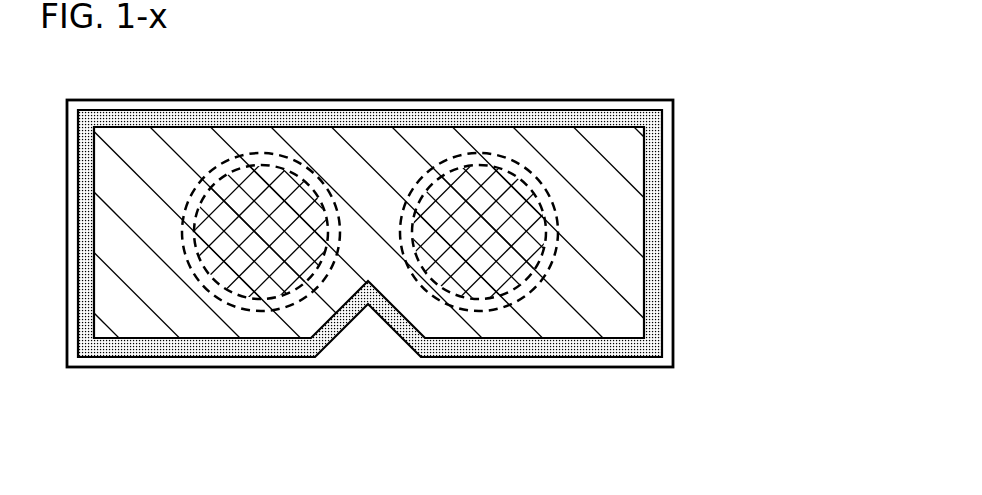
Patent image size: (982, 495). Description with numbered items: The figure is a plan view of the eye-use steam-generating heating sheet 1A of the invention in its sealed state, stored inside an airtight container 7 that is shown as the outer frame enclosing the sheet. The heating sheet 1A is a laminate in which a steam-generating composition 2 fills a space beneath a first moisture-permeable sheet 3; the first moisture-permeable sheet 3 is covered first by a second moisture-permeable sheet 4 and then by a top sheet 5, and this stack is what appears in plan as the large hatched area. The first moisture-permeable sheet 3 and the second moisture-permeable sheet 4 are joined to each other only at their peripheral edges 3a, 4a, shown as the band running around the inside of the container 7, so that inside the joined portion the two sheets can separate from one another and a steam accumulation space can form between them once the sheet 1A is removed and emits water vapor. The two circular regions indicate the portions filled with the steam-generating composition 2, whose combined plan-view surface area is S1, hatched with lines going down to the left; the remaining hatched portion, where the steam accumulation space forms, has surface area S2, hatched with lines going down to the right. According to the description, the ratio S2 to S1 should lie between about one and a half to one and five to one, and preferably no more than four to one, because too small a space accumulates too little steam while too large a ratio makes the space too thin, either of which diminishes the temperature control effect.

The eye-use steam-generating heating sheet 1A is at (822, 367).
The steam-generating composition 2 is at (481, 176).
The first moisture-permeable sheet 3 is at (426, 289).
The second moisture-permeable sheet 4 is at (426, 289).
The top sheet 5 is at (426, 289).
The peripheral edge of the first moisture-permeable sheet 3a is at (457, 233).
The peripheral edge of the second moisture-permeable sheet 4a is at (457, 233).
The airtight container 7 is at (415, 233).
The surface area of the portions filled with the steam-generating composition S1 is at (452, 458).
The surface area of the portion where the steam accumulation space is formed S2 is at (597, 458).